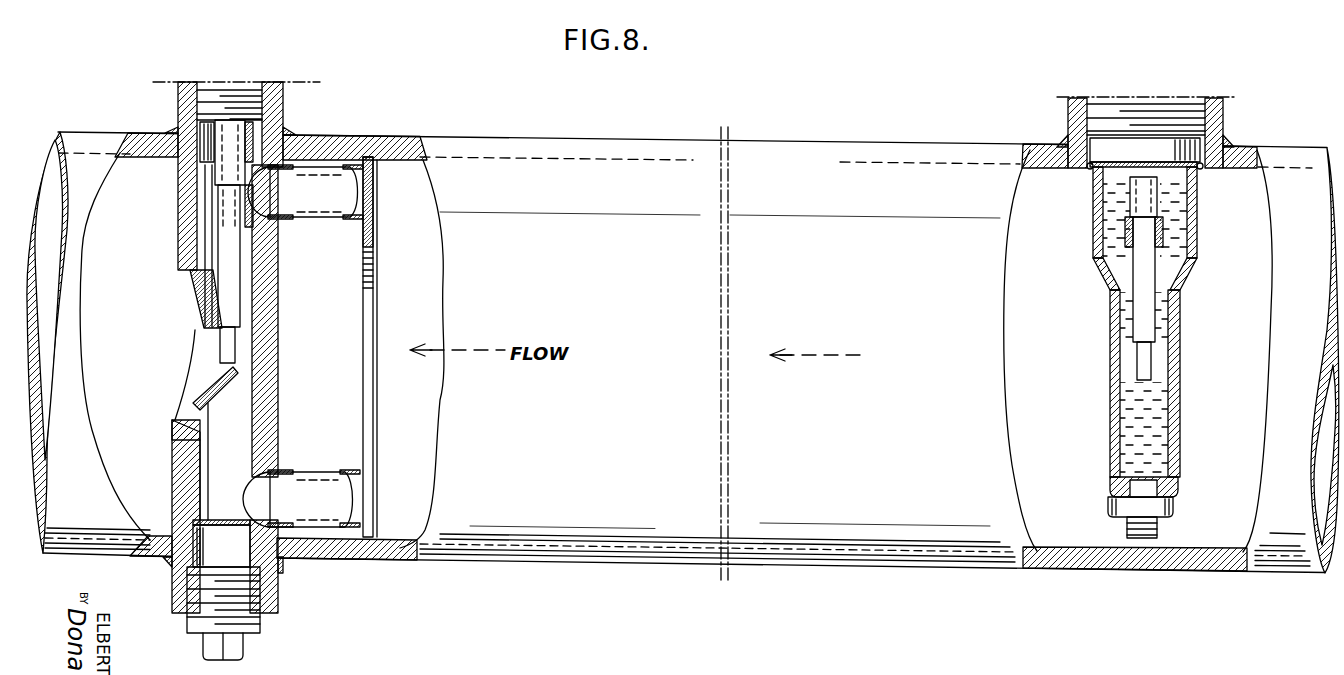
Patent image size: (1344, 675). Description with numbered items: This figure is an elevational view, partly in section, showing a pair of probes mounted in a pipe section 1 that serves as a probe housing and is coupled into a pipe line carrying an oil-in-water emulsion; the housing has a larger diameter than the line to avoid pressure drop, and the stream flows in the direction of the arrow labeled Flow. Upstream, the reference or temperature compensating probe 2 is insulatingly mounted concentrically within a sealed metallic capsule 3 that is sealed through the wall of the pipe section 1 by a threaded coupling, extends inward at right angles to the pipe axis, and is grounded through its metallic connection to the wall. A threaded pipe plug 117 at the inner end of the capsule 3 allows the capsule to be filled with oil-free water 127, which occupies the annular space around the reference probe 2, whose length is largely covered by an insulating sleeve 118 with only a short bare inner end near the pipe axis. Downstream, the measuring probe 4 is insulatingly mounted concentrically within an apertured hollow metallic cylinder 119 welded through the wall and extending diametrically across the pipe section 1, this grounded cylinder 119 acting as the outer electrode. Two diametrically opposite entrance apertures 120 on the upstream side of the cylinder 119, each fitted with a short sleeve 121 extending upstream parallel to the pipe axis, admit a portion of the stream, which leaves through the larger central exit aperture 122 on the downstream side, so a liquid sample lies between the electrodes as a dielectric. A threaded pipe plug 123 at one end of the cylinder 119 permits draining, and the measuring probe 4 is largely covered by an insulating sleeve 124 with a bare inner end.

The pipe section 1 is at (777, 152).
The reference probe 2 is at (1150, 357).
The sealed metallic capsule 3 is at (1173, 437).
The measuring probe 4 is at (237, 340).
The threaded pipe plug 117 is at (1130, 527).
The sleeve of electrical insulating material 118 is at (1147, 308).
The apertured hollow metallic cylinder 119 is at (180, 224).
The entrance apertures 120 is at (285, 172).
The short sleeve 121 is at (306, 207).
The exit aperture 122 is at (200, 363).
The threaded pipe plug 123 is at (260, 627).
The sleeve of electrical insulating material 124 is at (235, 287).
The water 127 is at (1157, 398).